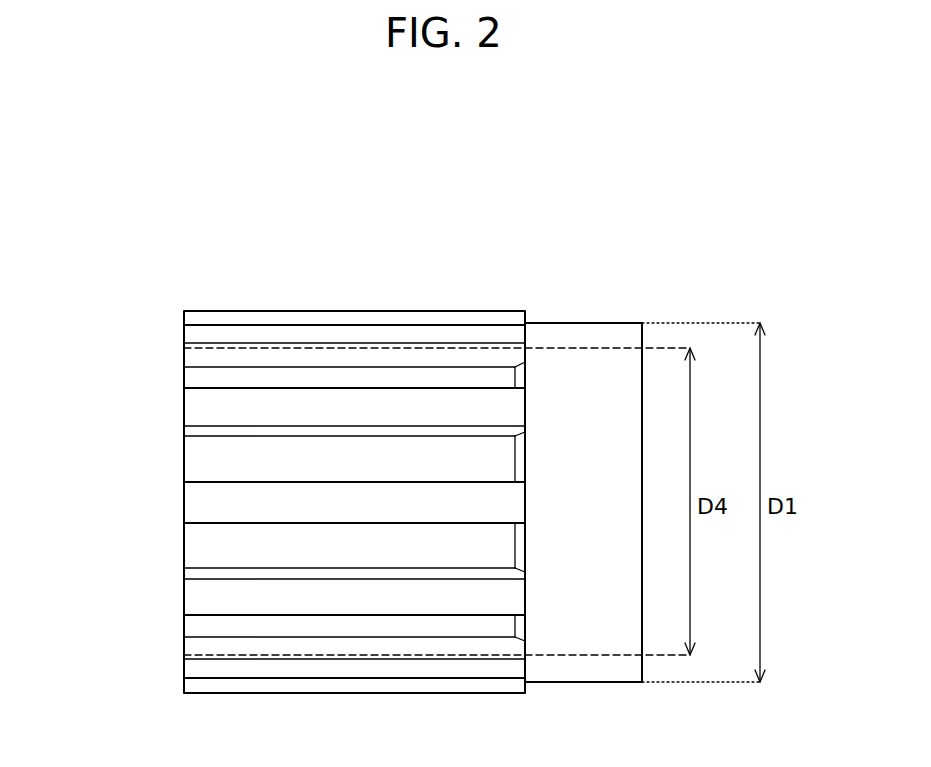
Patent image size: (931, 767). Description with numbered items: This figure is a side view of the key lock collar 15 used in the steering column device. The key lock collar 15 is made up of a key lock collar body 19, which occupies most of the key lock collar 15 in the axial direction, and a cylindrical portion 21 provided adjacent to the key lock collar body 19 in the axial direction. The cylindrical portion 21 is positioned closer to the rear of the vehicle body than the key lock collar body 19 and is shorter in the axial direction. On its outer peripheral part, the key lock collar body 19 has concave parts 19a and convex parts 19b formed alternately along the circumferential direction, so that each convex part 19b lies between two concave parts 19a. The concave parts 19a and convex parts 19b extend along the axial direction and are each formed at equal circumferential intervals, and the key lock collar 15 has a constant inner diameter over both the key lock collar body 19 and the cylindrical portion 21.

The key lock collar 15 is at (382, 474).
The key lock collar body 19 is at (420, 311).
The concave parts 19a is at (330, 448).
The convex parts 19b is at (200, 405).
The cylindrical portion 21 is at (583, 455).